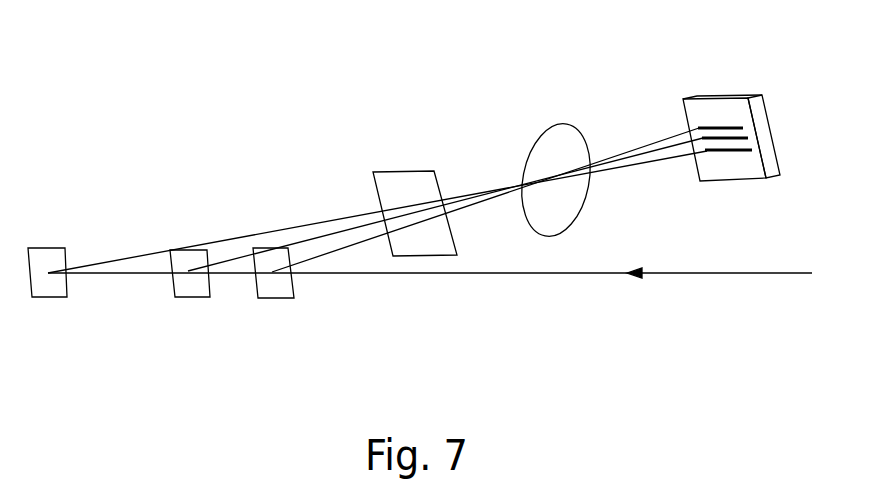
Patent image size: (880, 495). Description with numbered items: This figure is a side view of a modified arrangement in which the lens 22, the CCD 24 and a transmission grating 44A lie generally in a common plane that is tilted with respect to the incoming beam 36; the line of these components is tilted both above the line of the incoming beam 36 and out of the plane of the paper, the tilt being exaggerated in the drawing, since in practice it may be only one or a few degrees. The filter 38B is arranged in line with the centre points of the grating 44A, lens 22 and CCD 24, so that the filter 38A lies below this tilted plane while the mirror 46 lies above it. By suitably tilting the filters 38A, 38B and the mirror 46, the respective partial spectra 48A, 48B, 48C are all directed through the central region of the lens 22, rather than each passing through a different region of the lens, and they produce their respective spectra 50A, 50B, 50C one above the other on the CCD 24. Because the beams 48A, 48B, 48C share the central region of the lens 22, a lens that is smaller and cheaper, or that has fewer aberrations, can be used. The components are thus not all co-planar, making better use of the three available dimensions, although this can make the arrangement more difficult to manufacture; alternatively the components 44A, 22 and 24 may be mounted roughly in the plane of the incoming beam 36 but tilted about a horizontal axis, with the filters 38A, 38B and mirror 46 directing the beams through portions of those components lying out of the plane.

The lens 22 is at (538, 138).
The CCD 24 is at (693, 103).
The incoming beam 36 is at (538, 275).
The filter 38A is at (277, 288).
The filter 38B is at (197, 285).
The transmission grating 44A is at (397, 177).
The mirror 46 is at (48, 290).
The partial spectrum 48A is at (343, 252).
The partial spectrum 48B is at (328, 237).
The partial spectrum 48C is at (122, 257).
The spectrum 50A is at (740, 128).
The spectrum 50B is at (748, 137).
The spectrum 50C is at (748, 150).